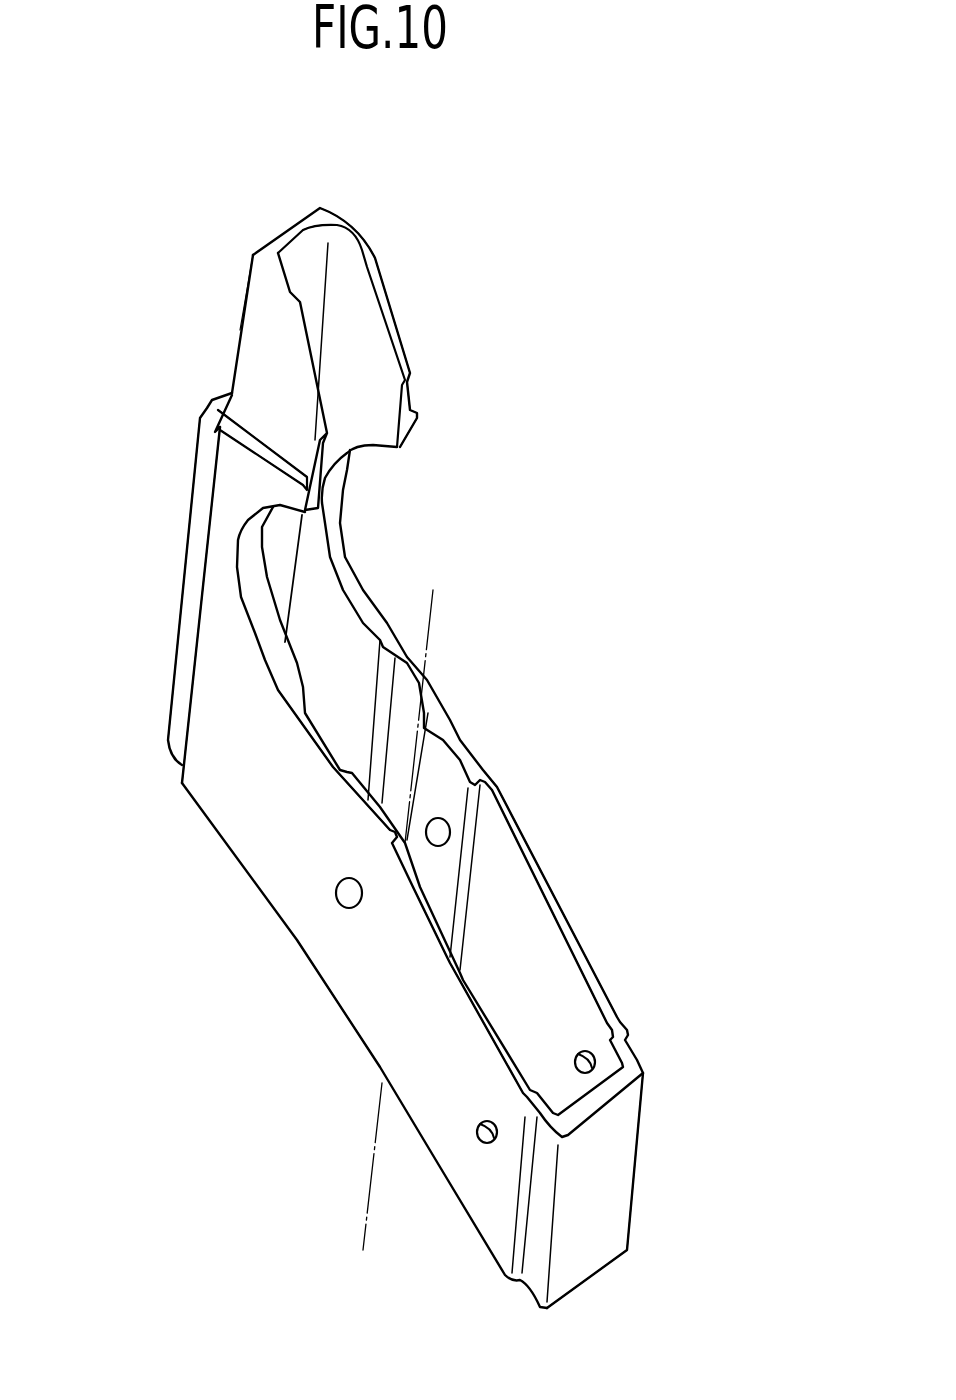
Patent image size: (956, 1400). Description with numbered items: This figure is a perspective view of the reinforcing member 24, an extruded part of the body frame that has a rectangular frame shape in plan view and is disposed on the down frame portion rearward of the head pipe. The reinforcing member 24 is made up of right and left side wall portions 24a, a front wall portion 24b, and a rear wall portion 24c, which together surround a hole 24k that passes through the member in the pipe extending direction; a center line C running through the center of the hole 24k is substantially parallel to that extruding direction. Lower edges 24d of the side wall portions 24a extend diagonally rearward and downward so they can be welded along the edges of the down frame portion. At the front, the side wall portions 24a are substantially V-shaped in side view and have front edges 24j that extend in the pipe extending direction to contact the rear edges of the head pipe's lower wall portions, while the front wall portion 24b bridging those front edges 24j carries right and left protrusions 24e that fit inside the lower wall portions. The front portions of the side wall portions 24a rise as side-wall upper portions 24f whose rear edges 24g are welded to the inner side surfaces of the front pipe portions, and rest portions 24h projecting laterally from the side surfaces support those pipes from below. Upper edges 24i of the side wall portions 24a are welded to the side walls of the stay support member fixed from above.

The reinforcing member 24 is at (392, 220).
The side wall portions 24a is at (527, 943).
The front wall portion 24b is at (307, 262).
The rear wall portion 24c is at (595, 1200).
The lower edges 24d is at (318, 962).
The protrusions 24e is at (193, 450).
The side-wall upper portions 24f is at (373, 408).
The rear edges 24g is at (310, 343).
The rest portions 24h is at (235, 433).
The upper edges 24i is at (512, 822).
The front edges 24j is at (193, 635).
The hole 24k is at (343, 663).
The center line C is at (432, 623).